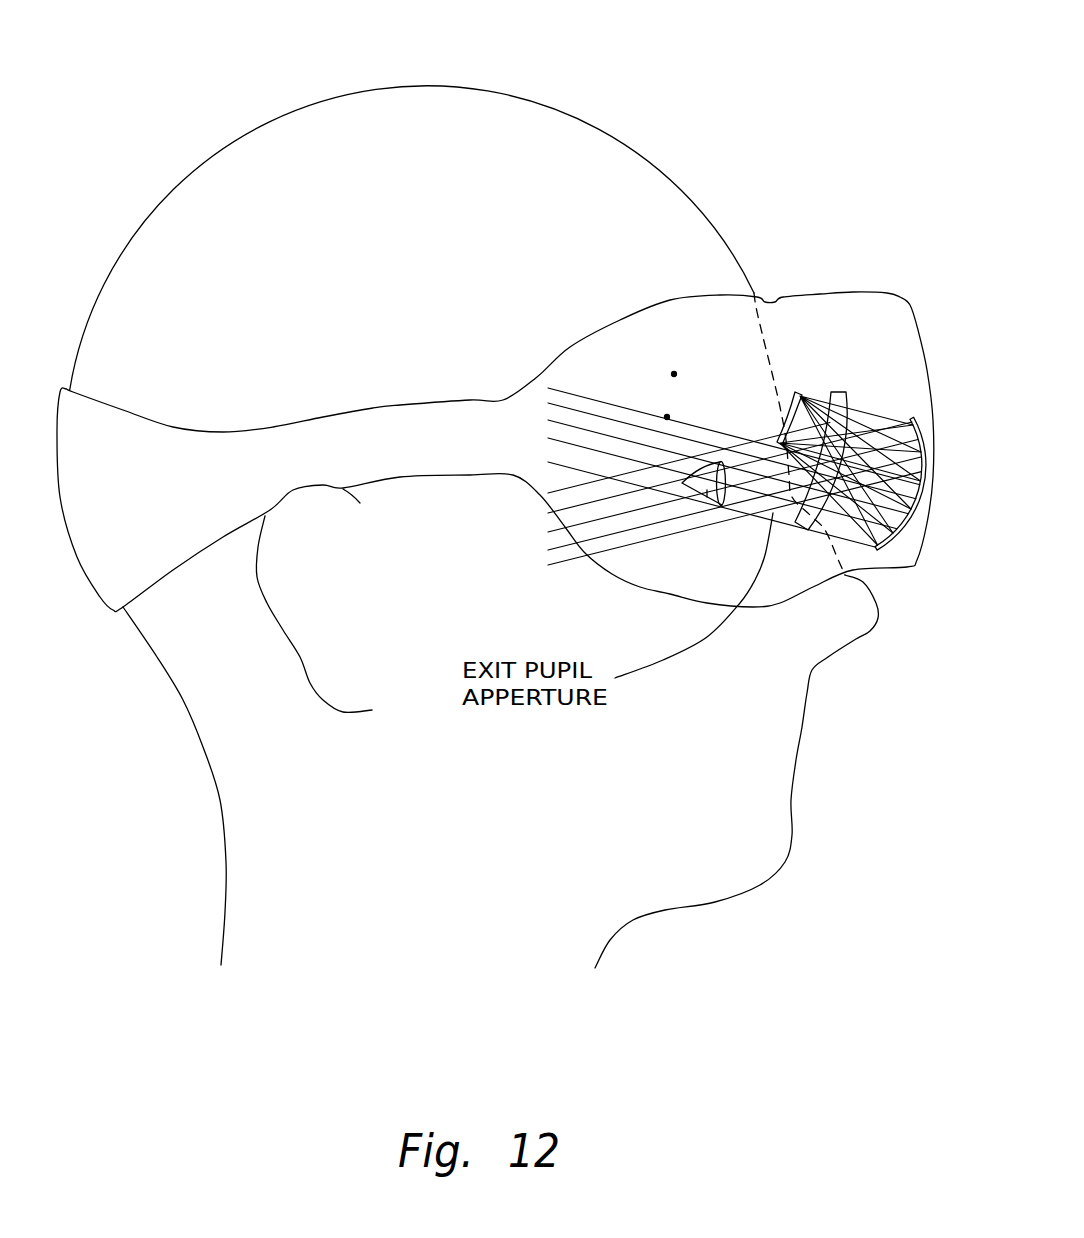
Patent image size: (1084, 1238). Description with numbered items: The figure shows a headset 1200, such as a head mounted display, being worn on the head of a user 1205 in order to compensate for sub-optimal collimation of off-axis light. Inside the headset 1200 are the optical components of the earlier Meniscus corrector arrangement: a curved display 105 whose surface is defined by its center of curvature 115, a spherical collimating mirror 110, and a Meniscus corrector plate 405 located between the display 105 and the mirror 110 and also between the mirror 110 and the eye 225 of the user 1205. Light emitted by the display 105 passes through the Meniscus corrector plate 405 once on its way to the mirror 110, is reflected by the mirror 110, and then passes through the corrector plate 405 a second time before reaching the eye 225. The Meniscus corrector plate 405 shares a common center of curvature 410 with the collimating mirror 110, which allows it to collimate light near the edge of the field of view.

The user 1205 is at (327, 93).
The headset 1200 is at (701, 297).
The center of curvature of the display 115 is at (674, 371).
The center of curvature of the Meniscus corrector plate 410 is at (667, 415).
The Meniscus corrector plate 405 is at (842, 388).
The display 105 is at (798, 388).
The spherical collimating mirror 110 is at (876, 551).
The eye 225 is at (707, 497).